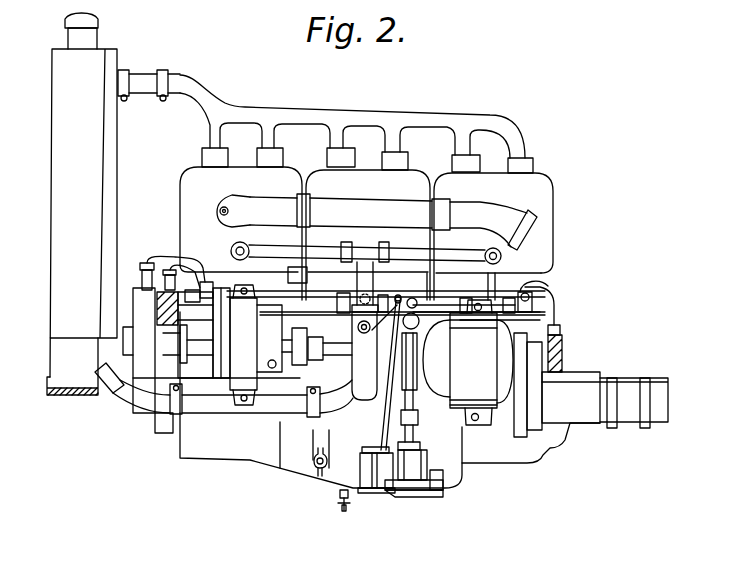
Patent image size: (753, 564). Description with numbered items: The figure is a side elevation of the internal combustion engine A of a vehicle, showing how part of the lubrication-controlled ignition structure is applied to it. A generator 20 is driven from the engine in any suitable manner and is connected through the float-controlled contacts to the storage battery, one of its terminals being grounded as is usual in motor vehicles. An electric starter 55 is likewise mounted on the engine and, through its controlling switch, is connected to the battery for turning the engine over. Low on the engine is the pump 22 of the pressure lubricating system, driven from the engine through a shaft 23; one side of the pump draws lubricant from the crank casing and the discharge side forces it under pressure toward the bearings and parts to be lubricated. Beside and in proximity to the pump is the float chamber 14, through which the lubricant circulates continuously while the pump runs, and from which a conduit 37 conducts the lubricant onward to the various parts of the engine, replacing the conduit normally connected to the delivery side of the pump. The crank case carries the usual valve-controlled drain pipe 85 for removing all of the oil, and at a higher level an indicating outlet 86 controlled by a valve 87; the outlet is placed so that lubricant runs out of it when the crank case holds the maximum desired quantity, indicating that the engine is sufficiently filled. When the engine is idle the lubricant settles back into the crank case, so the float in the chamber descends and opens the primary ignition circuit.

The engine A is at (553, 250).
The generator 20 is at (291, 345).
The electric starter 55 is at (468, 362).
The conduit 37 is at (385, 419).
The shaft 23 is at (421, 428).
The pump 22 is at (444, 492).
The float chamber 14 is at (362, 475).
The indicating outlet 86 is at (316, 463).
The valve 87 is at (315, 447).
The drain pipe 85 is at (346, 513).